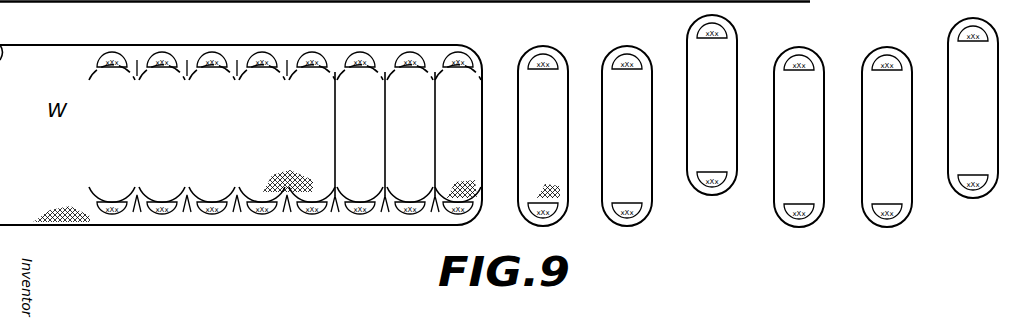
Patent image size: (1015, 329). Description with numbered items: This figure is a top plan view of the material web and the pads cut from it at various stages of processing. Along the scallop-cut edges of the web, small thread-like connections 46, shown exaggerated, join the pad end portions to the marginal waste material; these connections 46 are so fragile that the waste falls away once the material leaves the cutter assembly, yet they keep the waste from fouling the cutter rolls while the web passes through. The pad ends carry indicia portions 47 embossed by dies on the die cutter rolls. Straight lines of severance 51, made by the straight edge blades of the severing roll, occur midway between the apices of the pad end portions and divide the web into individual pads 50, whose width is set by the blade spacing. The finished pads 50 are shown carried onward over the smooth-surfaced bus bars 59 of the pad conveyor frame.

The thread-like connections 46 is at (143, 50).
The indicia portions 47 is at (400, 58).
The individual pads 50 is at (305, 158).
The straight lines of severance 51 is at (335, 128).
The bus bars 59 is at (505, 3).